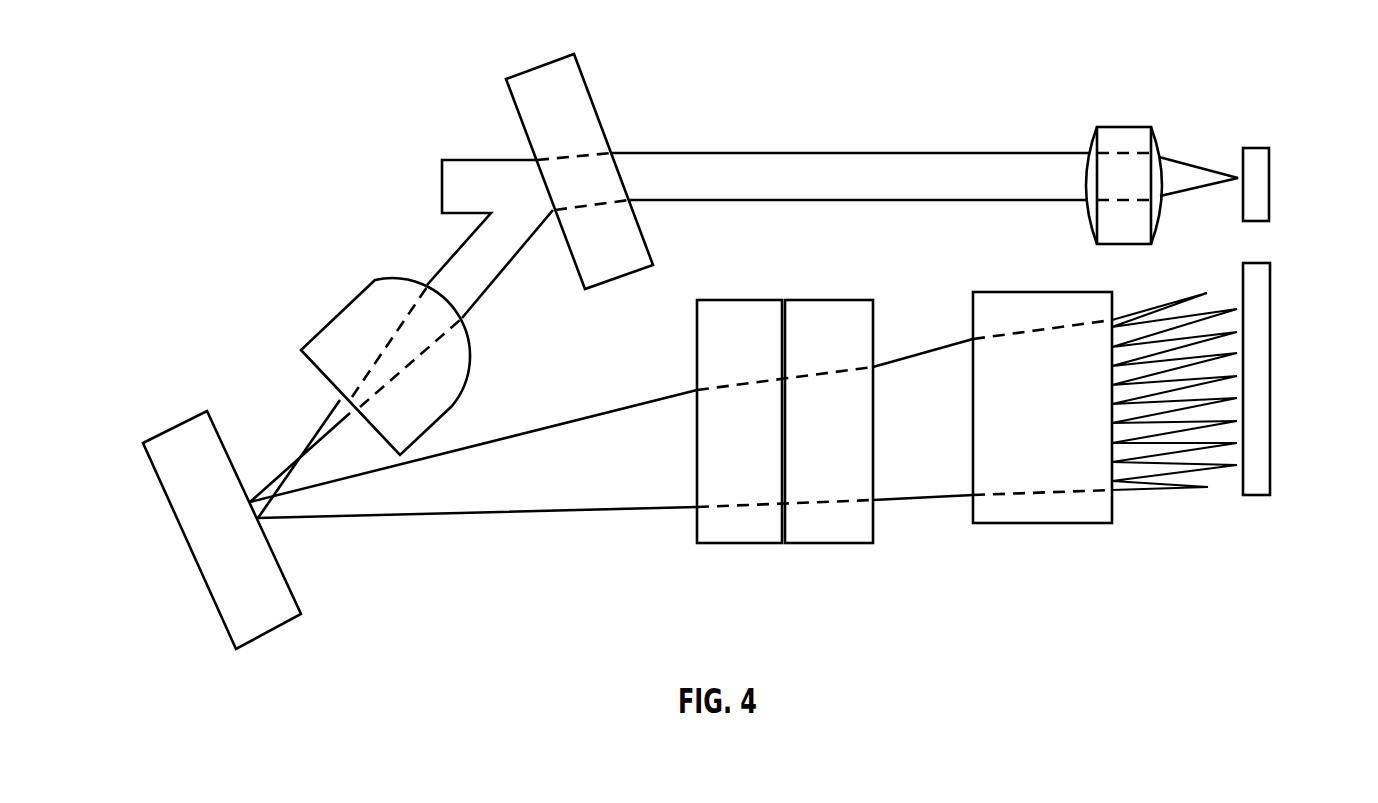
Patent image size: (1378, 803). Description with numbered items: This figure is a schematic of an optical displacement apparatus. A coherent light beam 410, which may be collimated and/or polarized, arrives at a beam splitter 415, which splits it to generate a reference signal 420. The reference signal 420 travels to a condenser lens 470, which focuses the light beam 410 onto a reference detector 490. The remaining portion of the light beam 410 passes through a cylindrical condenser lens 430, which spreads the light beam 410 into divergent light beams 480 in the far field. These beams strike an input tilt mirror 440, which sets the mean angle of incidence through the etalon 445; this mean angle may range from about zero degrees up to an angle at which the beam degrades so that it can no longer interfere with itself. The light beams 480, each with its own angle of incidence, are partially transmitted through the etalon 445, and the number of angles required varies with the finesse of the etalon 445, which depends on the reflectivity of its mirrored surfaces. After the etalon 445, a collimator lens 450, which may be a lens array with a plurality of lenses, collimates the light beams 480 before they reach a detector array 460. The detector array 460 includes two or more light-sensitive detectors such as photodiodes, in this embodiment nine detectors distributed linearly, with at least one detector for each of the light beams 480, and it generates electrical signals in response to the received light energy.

The coherent light beam 410 is at (465, 158).
The beam splitter 415 is at (540, 62).
The reference signal 420 is at (737, 153).
The cylindrical condenser lens 430 is at (372, 281).
The input tilt mirror 440 is at (175, 425).
The etalon 445 is at (722, 544).
The collimator lens 450 is at (1075, 524).
The detector array 460 is at (1270, 328).
The condenser lens 470 is at (1130, 127).
The divergent light beams 480 is at (548, 512).
The reference detector 490 is at (1269, 179).